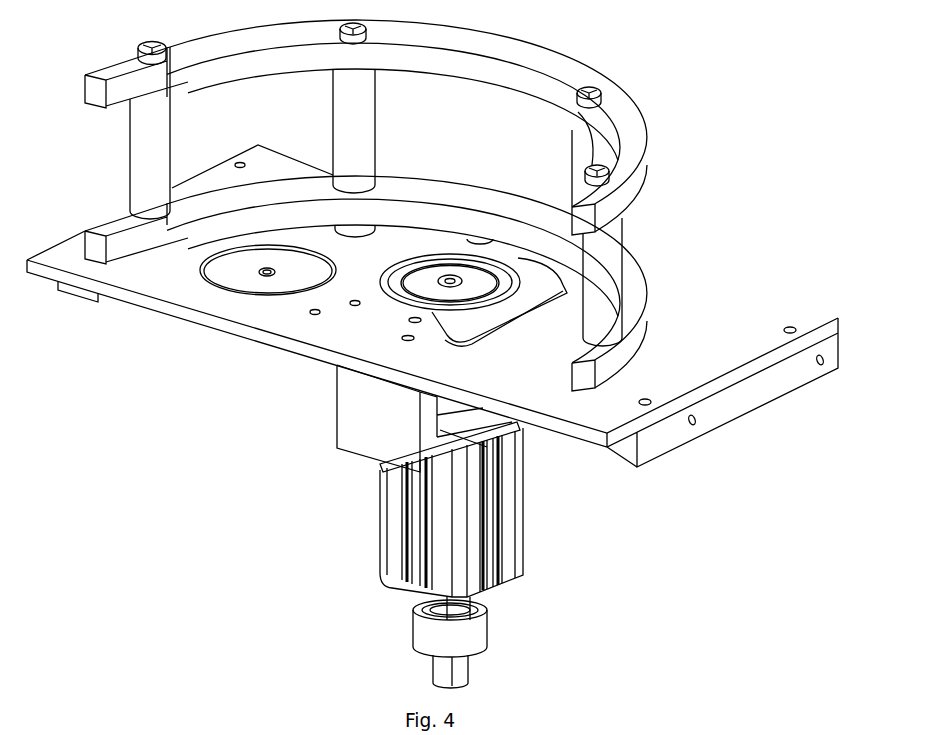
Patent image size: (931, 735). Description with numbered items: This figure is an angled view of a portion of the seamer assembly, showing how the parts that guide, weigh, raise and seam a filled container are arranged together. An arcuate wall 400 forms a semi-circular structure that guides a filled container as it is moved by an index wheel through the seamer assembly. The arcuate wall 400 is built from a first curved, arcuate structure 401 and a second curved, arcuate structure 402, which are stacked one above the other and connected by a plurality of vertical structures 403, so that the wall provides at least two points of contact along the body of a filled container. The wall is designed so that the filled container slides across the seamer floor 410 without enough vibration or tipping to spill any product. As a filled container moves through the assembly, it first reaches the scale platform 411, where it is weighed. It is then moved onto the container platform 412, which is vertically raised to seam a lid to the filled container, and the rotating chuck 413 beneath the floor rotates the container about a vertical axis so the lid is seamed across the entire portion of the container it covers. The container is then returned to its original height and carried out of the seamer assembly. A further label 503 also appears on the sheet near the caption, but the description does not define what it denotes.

The arcuate wall 400 is at (432, 344).
The first curved, arcuate structure 401 is at (427, 65).
The second curved, arcuate structure 402 is at (477, 223).
The vertical structures 403 is at (357, 110).
The seamer floor 410 is at (167, 268).
The scale platform 411 is at (266, 276).
The container platform 412 is at (452, 281).
The rotating chuck 413 is at (460, 498).
The reference numeral from adjacent figure 503 is at (178, 733).